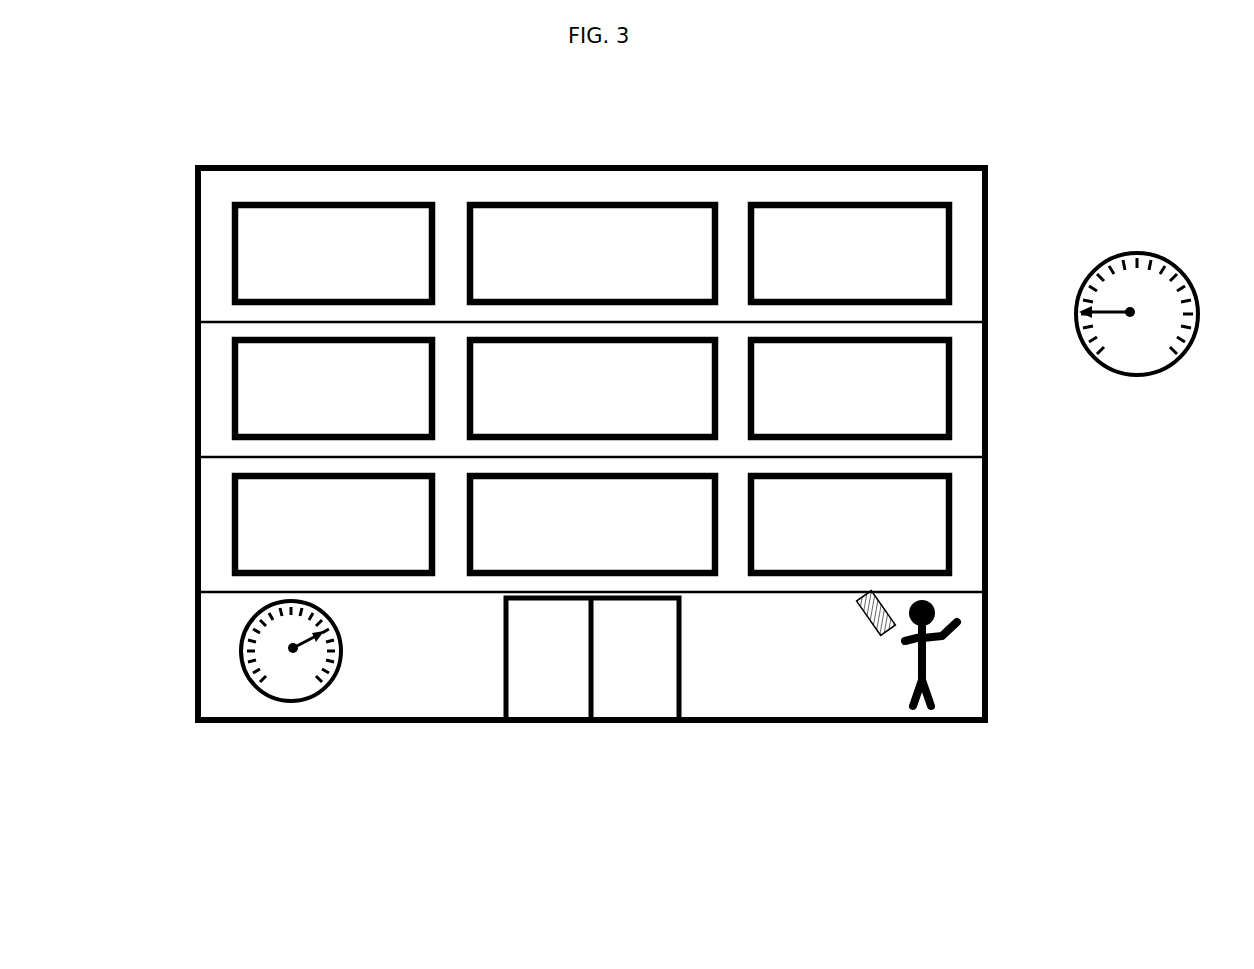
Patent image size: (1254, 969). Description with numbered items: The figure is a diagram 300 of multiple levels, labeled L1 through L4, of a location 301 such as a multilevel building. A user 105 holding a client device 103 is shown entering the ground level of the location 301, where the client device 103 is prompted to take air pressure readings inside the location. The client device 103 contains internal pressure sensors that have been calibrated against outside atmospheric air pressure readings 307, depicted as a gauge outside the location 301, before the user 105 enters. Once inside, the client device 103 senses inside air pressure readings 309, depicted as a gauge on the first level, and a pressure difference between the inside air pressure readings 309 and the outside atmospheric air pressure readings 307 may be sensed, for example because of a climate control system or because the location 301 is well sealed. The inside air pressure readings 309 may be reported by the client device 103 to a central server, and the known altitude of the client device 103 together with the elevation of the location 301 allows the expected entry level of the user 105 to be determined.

The diagram 300 is at (1184, 41).
The location 301 is at (918, 160).
The outside atmospheric air pressure readings 307 is at (1183, 360).
The inside air pressure readings 309 is at (237, 650).
The client device 103 is at (864, 624).
The user 105 is at (912, 688).